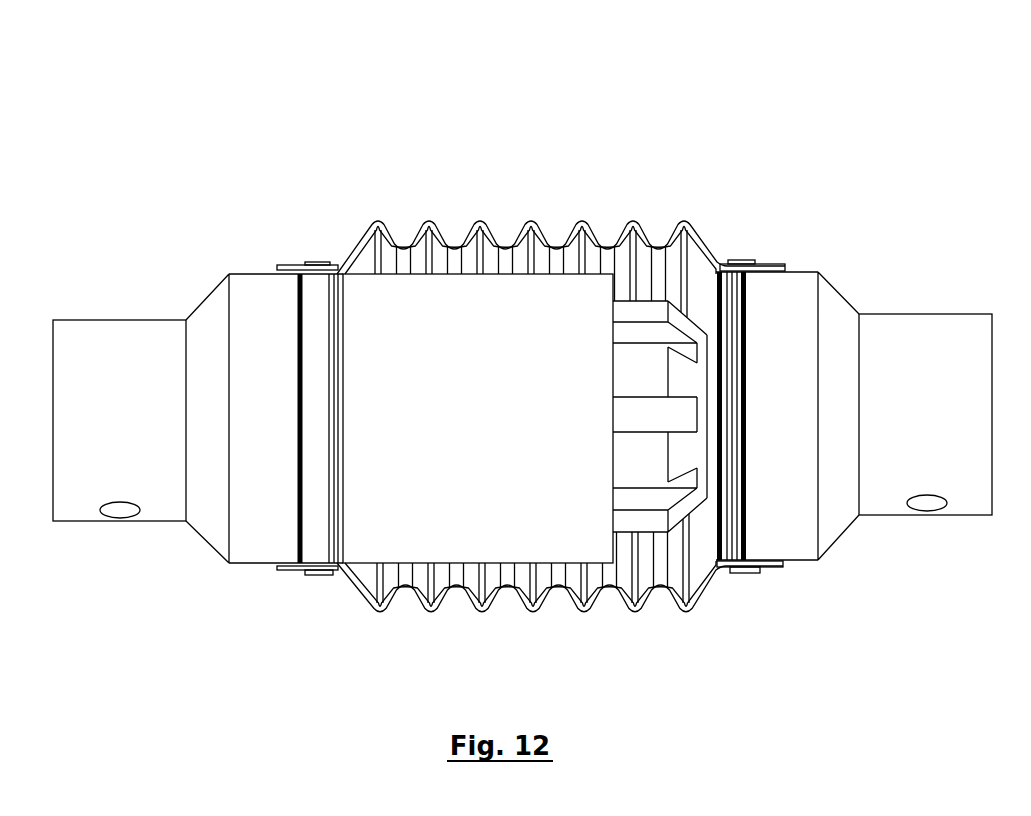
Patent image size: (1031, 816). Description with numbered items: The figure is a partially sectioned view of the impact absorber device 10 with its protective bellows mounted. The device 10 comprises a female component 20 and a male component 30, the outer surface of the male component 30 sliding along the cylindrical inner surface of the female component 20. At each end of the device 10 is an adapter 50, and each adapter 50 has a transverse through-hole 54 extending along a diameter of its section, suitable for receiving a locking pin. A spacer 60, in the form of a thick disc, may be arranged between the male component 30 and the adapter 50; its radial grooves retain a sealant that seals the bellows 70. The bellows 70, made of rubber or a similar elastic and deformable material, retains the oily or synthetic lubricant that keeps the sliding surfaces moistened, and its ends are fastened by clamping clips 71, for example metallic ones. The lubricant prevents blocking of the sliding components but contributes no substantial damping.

The device 10 is at (214, 153).
The female component 20 is at (478, 272).
The male component 30 is at (648, 522).
The adapter 50 is at (95, 307).
The transverse through-hole 54 is at (122, 512).
The spacer 60 is at (737, 547).
The protection bellows 70 is at (553, 223).
The clamping clips 71 is at (321, 256).